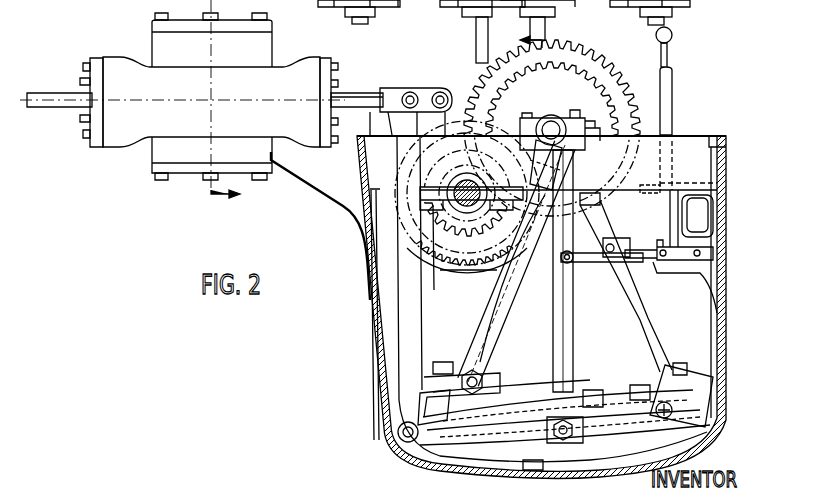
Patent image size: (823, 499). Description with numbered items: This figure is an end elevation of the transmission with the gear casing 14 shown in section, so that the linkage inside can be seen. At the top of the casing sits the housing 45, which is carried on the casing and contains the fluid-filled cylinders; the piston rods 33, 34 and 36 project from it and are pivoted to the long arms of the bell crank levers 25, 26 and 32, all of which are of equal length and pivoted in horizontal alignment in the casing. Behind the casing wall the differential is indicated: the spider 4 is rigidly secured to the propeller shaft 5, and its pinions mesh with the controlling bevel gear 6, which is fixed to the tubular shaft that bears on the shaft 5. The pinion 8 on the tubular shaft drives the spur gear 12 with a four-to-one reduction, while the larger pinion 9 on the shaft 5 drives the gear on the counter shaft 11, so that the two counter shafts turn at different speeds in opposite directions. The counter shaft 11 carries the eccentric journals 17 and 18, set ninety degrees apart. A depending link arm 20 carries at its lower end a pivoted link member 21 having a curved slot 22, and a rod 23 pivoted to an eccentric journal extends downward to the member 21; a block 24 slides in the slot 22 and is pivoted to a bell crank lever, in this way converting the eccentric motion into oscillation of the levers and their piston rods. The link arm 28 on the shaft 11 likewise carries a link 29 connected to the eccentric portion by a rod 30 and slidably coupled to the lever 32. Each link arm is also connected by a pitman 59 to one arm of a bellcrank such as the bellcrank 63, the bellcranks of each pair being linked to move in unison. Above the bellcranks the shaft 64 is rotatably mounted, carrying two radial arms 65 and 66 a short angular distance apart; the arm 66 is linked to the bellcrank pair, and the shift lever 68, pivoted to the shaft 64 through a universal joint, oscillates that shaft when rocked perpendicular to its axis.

The spider 4 is at (340, 282).
The shaft 5 is at (407, 198).
The controlling bevel gear 6 is at (407, 257).
The pinion 8 is at (482, 218).
The pinion 9 is at (467, 203).
The counter shaft 11 is at (567, 124).
The spur gear 12 is at (600, 60).
The gear casing 14 is at (373, 358).
The eccentric journal 17 is at (580, 160).
The eccentric journal 18 is at (551, 114).
The link arm 20 is at (632, 305).
The link member 21 is at (640, 443).
The curved slot 22 is at (633, 410).
The rod 23 is at (580, 330).
The block 24 is at (683, 393).
The bell crank lever 25 is at (440, 300).
The bell crank lever 26 is at (390, 295).
The link arm 28 is at (558, 308).
The link 29 is at (483, 397).
The rod 30 is at (490, 330).
The bellcrank lever 32 is at (410, 325).
The piston rod 33 is at (425, 90).
The piston rod 34 is at (370, 90).
The piston rod 36 is at (350, 97).
The housing 45 is at (182, 95).
The pitman 59 is at (598, 262).
The bellcrank 63 is at (677, 264).
The shaft 64 is at (678, 171).
The arm 65 is at (697, 216).
The arm 66 is at (727, 222).
The shift lever 68 is at (676, 112).